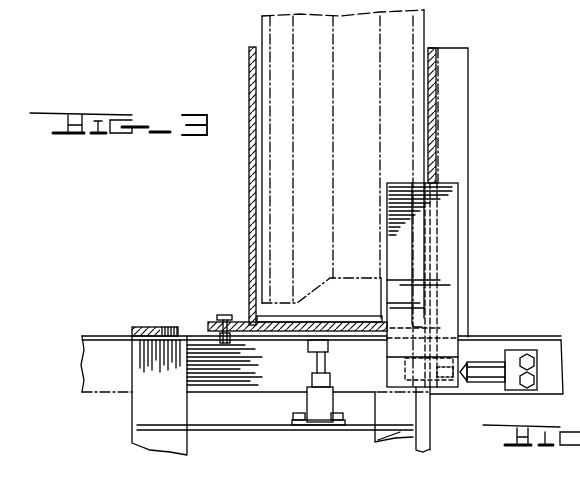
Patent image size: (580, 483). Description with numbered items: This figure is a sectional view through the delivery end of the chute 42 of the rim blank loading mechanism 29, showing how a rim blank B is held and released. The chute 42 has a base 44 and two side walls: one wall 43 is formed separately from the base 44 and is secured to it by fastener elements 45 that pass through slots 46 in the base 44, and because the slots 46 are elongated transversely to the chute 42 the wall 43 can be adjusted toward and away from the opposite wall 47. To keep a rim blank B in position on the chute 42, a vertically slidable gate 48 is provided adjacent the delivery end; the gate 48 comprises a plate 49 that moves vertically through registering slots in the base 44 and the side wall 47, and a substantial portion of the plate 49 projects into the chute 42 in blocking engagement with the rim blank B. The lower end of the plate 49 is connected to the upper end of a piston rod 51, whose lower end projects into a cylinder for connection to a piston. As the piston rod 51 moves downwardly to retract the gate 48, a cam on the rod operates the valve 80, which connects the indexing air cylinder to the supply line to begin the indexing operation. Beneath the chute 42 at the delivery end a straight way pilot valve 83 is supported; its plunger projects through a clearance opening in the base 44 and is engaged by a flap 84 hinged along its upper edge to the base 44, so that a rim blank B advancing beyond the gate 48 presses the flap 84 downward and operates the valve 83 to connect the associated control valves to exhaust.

The rim blank B is at (417, 44).
The rim blank loading mechanism 29 is at (542, 335).
The chute 42 is at (248, 218).
The wall 43 is at (254, 172).
The base 44 is at (317, 322).
The fastener elements 45 is at (224, 315).
The slots 46 is at (178, 330).
The opposite wall 47 is at (433, 123).
The gate 48 is at (442, 272).
The plate 49 is at (452, 220).
The piston rod 51 is at (417, 448).
The valve 80 is at (480, 362).
The straight way pilot valve 83 is at (323, 403).
The flap 84 is at (305, 318).